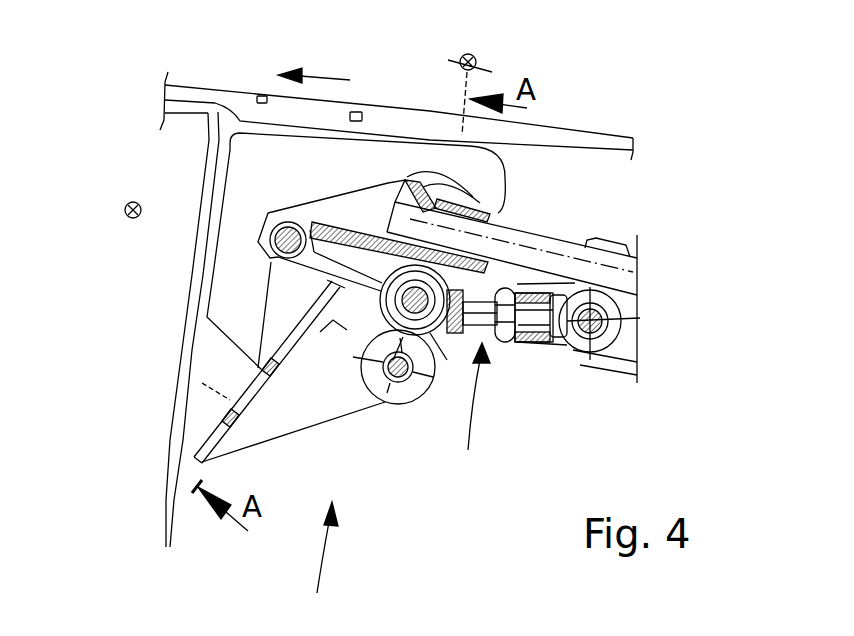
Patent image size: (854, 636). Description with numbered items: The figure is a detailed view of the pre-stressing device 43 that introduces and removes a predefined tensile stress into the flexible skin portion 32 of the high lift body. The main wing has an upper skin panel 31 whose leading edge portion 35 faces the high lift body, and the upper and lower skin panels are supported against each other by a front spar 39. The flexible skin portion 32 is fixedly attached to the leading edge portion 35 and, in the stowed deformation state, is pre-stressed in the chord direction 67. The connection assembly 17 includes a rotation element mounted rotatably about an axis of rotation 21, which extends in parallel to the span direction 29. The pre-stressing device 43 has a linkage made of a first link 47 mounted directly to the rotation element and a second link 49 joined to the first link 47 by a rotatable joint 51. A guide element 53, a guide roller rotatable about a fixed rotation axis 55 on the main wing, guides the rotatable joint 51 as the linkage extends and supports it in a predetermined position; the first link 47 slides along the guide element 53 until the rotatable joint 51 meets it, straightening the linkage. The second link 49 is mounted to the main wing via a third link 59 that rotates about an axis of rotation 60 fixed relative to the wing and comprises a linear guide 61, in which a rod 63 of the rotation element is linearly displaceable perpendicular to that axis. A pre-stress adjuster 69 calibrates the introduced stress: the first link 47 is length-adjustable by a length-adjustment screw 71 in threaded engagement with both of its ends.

The connection assembly 17 is at (613, 240).
The axis of rotation 21 is at (472, 57).
The span direction 29 is at (133, 202).
The upper skin panel 31 is at (236, 101).
The flexible skin portion 32 is at (582, 133).
The leading edge portion 35 is at (400, 183).
The front spar 39 is at (183, 355).
The pre-stressing device 43 is at (316, 566).
The first link 47 is at (532, 342).
The second link 49 is at (320, 268).
The rotatable joint 51 is at (432, 336).
The guide element 53 is at (407, 393).
The fixed rotation axis 55 is at (362, 373).
The third link 59 is at (355, 200).
The axis of rotation 60 is at (397, 200).
The linear guide 61 is at (505, 212).
The rod 63 is at (560, 248).
The chord direction 67 is at (323, 76).
The pre-stress adjuster 69 is at (471, 415).
The length-adjustment screw 71 is at (503, 342).